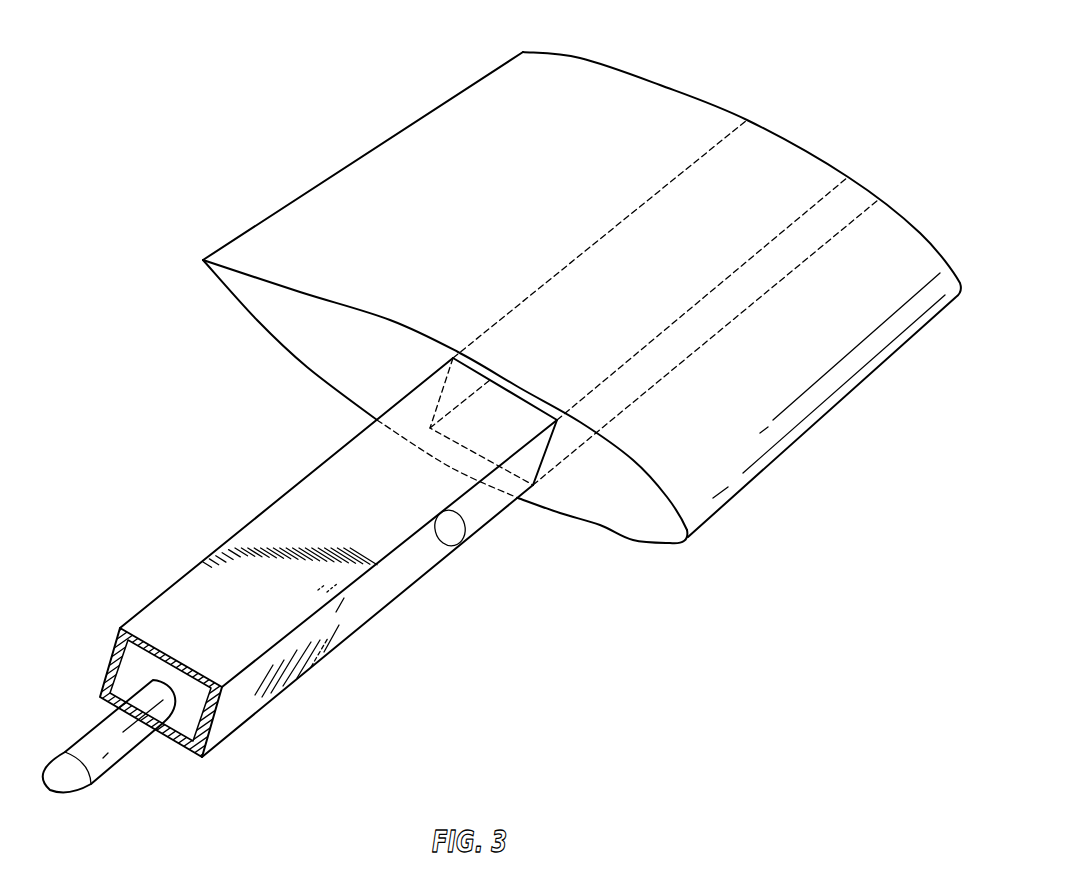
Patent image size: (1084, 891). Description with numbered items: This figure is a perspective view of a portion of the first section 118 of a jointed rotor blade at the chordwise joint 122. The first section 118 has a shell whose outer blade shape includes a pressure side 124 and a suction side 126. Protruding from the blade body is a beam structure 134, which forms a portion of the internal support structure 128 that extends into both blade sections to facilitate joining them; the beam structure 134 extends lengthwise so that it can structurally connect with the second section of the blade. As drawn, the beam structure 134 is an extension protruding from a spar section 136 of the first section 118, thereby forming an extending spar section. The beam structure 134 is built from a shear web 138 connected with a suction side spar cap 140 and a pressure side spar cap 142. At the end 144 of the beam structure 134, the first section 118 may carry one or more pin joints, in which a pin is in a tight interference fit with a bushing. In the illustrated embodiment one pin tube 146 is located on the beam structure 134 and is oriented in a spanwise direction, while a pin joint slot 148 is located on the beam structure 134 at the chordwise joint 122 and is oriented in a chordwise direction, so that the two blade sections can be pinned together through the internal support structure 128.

The first section 118 is at (353, 177).
The chordwise joint 122 is at (127, 342).
The pressure side 124 is at (307, 367).
The suction side 126 is at (613, 105).
The internal support structure 128 is at (353, 660).
The beam structure 134 is at (165, 608).
The spar section 136 is at (788, 172).
The shear web 138 is at (397, 578).
The suction side spar cap 140 is at (450, 465).
The pressure side spar cap 142 is at (505, 388).
The end of the beam structure 144 is at (233, 747).
The pin tube 146 is at (120, 755).
The pin joint slot 148 is at (452, 528).